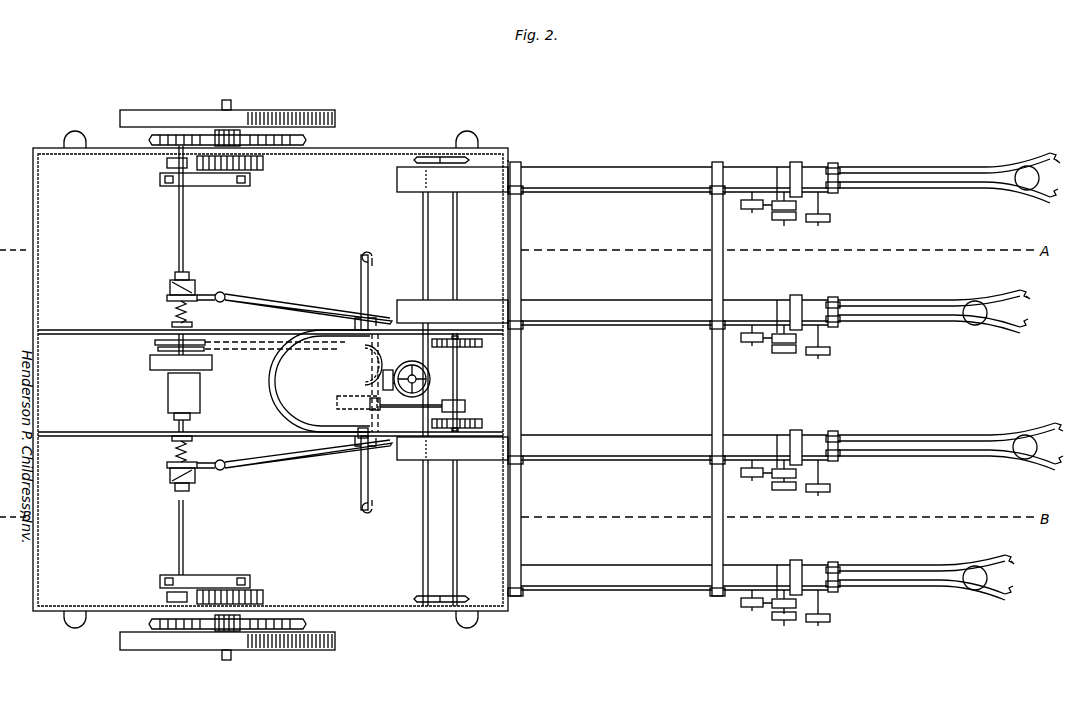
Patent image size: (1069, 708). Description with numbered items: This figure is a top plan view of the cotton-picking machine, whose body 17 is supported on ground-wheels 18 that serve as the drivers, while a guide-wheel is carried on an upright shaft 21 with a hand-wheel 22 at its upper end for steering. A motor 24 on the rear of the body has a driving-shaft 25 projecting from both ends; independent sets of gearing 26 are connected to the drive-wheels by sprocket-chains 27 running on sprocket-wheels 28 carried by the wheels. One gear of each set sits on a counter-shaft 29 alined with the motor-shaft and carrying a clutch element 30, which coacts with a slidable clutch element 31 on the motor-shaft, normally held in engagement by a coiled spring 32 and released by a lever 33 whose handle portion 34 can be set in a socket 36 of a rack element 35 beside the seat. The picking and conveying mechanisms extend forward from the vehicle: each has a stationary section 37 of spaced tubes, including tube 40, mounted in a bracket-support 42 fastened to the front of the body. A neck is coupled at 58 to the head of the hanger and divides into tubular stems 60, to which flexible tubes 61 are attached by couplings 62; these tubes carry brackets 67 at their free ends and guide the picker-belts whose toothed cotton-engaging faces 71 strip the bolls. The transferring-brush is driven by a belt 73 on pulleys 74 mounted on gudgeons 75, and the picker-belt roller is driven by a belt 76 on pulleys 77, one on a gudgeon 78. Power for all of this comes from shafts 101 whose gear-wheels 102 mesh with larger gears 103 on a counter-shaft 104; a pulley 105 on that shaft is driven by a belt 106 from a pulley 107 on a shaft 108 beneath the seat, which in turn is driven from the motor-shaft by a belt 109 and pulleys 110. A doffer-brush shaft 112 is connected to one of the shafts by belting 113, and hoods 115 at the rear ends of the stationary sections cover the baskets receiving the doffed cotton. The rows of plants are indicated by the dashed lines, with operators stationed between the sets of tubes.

The body 17 is at (270, 379).
The ground-wheels 18 is at (142, 115).
The upright shaft 21 is at (389, 369).
The hand-wheel 22 is at (413, 361).
The motor 24 is at (166, 392).
The driving-shaft 25 is at (174, 420).
The sets of gearing 26 is at (165, 167).
The sprocket-chains 27 is at (186, 133).
The sprocket-wheels 28 is at (236, 130).
The counter-shaft 29 is at (184, 236).
The clutch element 30 is at (172, 276).
The clutch elements 31 is at (168, 300).
The coiled springs 32 is at (193, 312).
The levers 33 is at (265, 300).
The handle portions 34 is at (376, 320).
The rack elements 35 is at (360, 296).
The sockets 36 is at (371, 285).
The stationary section 37 is at (674, 356).
The tube 40 is at (674, 380).
The bracket-support 42 is at (518, 166).
The coupling 58 is at (790, 162).
The tubular stems 60 is at (832, 162).
The flexible tube 61 is at (946, 372).
The couplings 62 is at (834, 168).
The brackets 67 is at (1053, 152).
The toothed cotton-engaging faces 71 is at (1022, 565).
The belt 73 is at (776, 222).
The pulleys 74 is at (750, 215).
The gudgeons 75 is at (778, 636).
The belt 76 is at (786, 222).
The pulleys 77 is at (812, 230).
The gudgeon 78 is at (818, 206).
The shafts 101 is at (458, 250).
The gear-wheels 102 is at (462, 348).
The gears 103 is at (485, 344).
The counter-shaft 104 is at (458, 384).
The pulley 105 is at (466, 408).
The belt 106 is at (377, 412).
The pulley 107 is at (342, 401).
The shaft 108 is at (358, 441).
The belt 109 is at (258, 352).
The pulleys 110 is at (155, 352).
The shaft 112 is at (424, 238).
The belting 113 is at (432, 157).
The hoods 115 is at (398, 185).